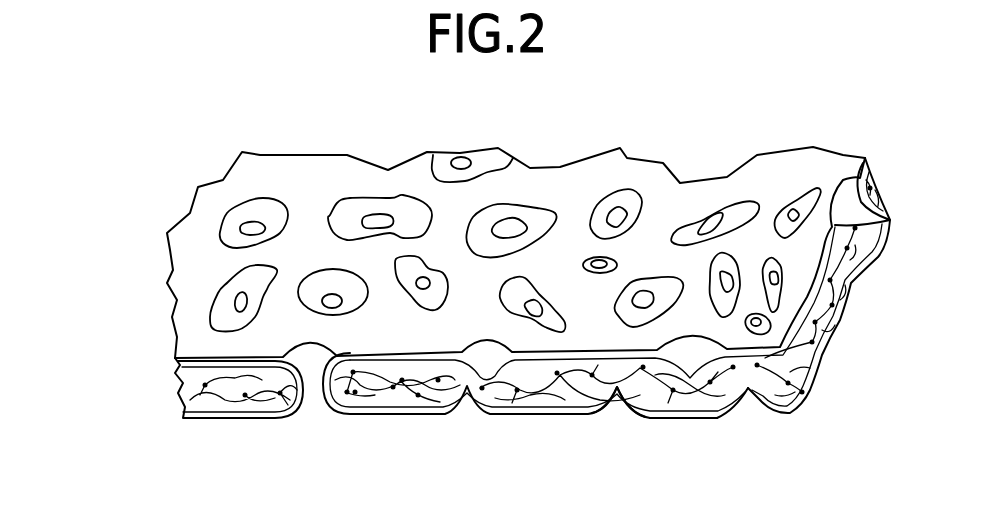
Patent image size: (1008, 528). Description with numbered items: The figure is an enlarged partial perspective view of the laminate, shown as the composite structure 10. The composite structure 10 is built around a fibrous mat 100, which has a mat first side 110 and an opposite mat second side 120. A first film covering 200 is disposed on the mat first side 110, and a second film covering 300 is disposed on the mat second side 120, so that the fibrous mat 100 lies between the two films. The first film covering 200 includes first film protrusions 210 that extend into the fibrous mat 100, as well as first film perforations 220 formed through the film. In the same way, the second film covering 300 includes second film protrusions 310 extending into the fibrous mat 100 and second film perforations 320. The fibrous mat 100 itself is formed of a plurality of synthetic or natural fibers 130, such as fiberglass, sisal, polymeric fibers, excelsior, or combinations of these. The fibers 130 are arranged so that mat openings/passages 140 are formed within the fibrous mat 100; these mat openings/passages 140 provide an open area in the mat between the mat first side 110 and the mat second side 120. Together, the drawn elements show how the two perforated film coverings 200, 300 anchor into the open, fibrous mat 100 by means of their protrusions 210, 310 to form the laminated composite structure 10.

The composite structure 10 is at (124, 280).
The fibrous mat 100 is at (772, 360).
The mat first side 110 is at (820, 372).
The mat second side 120 is at (697, 410).
The fibers 130 is at (193, 390).
The mat openings/passages 140 is at (273, 420).
The first film covering 200 is at (198, 358).
The first film protrusions 210 is at (274, 218).
The first film perforations 220 is at (247, 224).
The second film covering 300 is at (198, 423).
The second film protrusions 310 is at (640, 410).
The second film perforations 320 is at (620, 388).